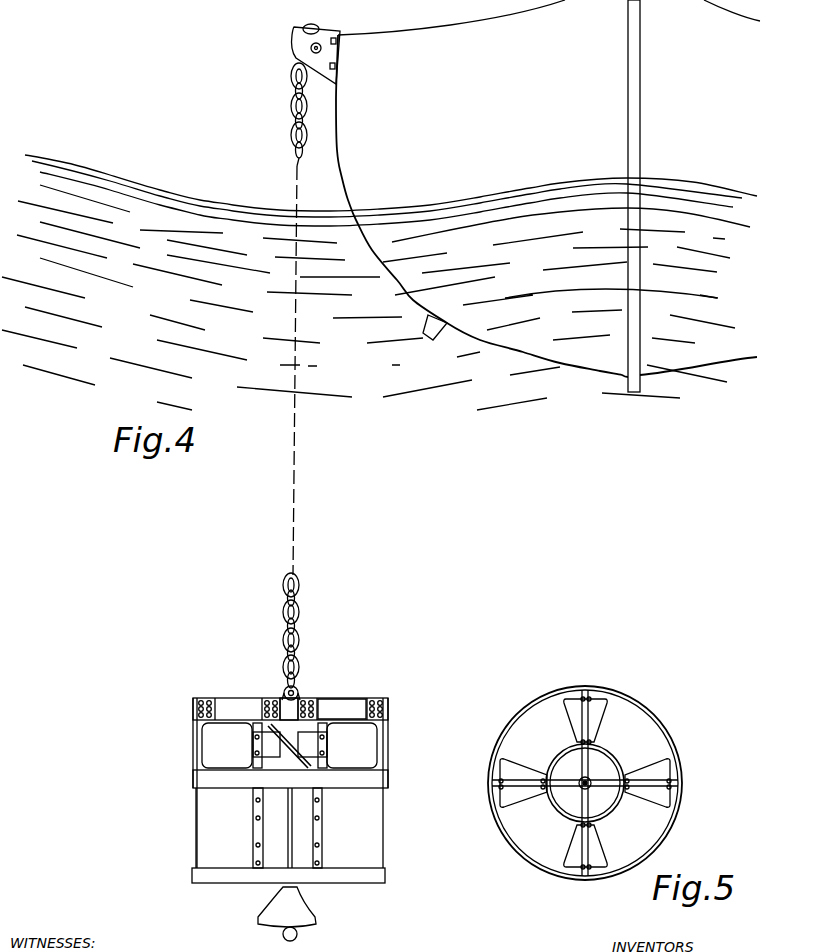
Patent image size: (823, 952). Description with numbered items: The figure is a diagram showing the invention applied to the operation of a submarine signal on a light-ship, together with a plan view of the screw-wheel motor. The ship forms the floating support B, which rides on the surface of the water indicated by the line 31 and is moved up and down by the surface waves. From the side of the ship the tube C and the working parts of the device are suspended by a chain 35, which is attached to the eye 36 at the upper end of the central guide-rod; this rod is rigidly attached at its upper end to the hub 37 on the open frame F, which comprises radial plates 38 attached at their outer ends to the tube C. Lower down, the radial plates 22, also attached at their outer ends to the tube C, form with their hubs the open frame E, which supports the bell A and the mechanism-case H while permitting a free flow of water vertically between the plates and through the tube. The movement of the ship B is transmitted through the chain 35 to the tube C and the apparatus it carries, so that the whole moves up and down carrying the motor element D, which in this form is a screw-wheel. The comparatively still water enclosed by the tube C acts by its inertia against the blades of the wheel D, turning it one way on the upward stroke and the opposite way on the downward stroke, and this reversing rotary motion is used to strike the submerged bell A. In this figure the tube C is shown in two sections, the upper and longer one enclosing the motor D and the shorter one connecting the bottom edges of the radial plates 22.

In FIG. 4, the radial plates 22 is at (212, 828).
In FIG. 4, the water surface line 31 is at (40, 157).
In FIG. 4, the chain 35 is at (292, 78).
In FIG. 4, the eye 36 is at (297, 690).
In FIG. 5, the eye 36 is at (590, 790).
In FIG. 4, the hub 37 is at (283, 703).
In FIG. 4, the radial plates 38 is at (230, 704).
In FIG. 5, the radial plates 38 is at (535, 780).
In FIG. 4, the underwater sound-producing device A is at (297, 903).
In FIG. 4, the floating support B is at (548, 196).
In FIG. 4, the tube C is at (385, 765).
In FIG. 4, the motor element D is at (365, 742).
In FIG. 5, the motor element D is at (655, 773).
In FIG. 4, the open frame E is at (365, 822).
In FIG. 4, the open frame F is at (347, 703).
In FIG. 4, the mechanism-case H is at (275, 832).